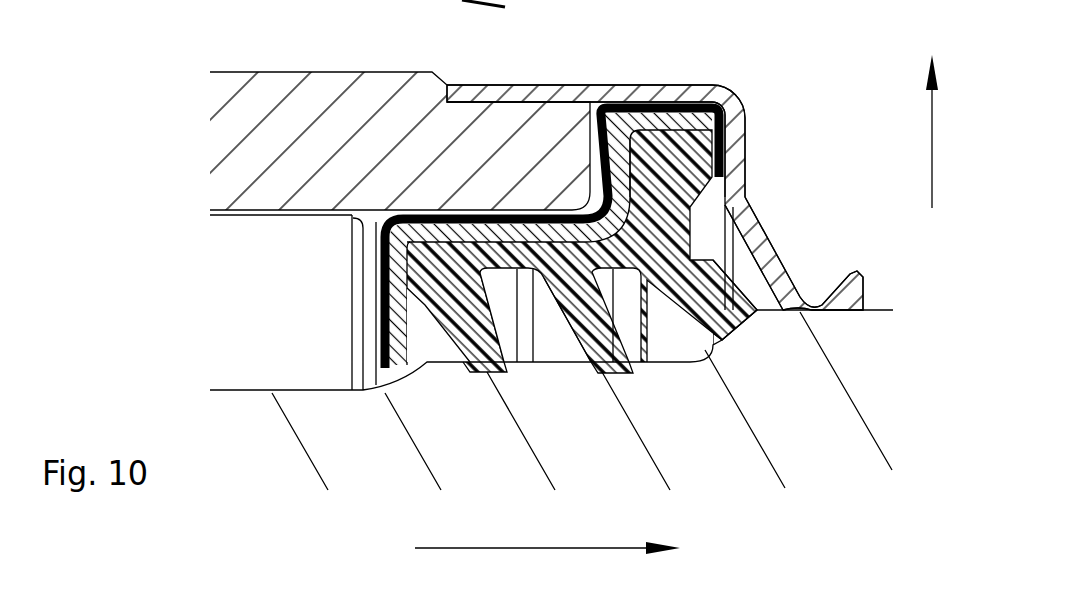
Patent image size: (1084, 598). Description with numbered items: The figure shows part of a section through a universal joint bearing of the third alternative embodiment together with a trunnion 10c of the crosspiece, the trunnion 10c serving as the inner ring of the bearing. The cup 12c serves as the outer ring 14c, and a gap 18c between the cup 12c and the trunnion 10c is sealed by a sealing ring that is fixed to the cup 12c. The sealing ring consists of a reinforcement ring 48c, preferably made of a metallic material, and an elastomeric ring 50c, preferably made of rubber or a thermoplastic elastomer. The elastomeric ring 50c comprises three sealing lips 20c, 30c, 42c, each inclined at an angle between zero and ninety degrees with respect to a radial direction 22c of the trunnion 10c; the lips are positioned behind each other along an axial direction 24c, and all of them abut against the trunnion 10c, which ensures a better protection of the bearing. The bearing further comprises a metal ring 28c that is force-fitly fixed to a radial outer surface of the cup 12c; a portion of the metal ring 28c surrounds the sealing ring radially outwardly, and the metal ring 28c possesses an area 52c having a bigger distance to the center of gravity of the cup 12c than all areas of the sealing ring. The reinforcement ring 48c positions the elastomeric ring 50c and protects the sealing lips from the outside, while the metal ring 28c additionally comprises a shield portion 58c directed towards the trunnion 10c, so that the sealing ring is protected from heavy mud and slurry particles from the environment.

The trunnion 10c is at (848, 461).
The cup 12c is at (352, 119).
The outer ring 14c is at (292, 83).
The gap 18c is at (595, 273).
The first sealing lip 20c is at (614, 348).
The radial direction 22c is at (932, 155).
The axial direction 24c is at (547, 531).
The metal ring 28c is at (737, 193).
The second sealing lip 30c is at (477, 350).
The third sealing lip 42c is at (733, 340).
The reinforcement ring 48c is at (735, 115).
The elastomeric ring 50c is at (683, 85).
The area 52c is at (730, 87).
The shield portion 58c is at (773, 260).